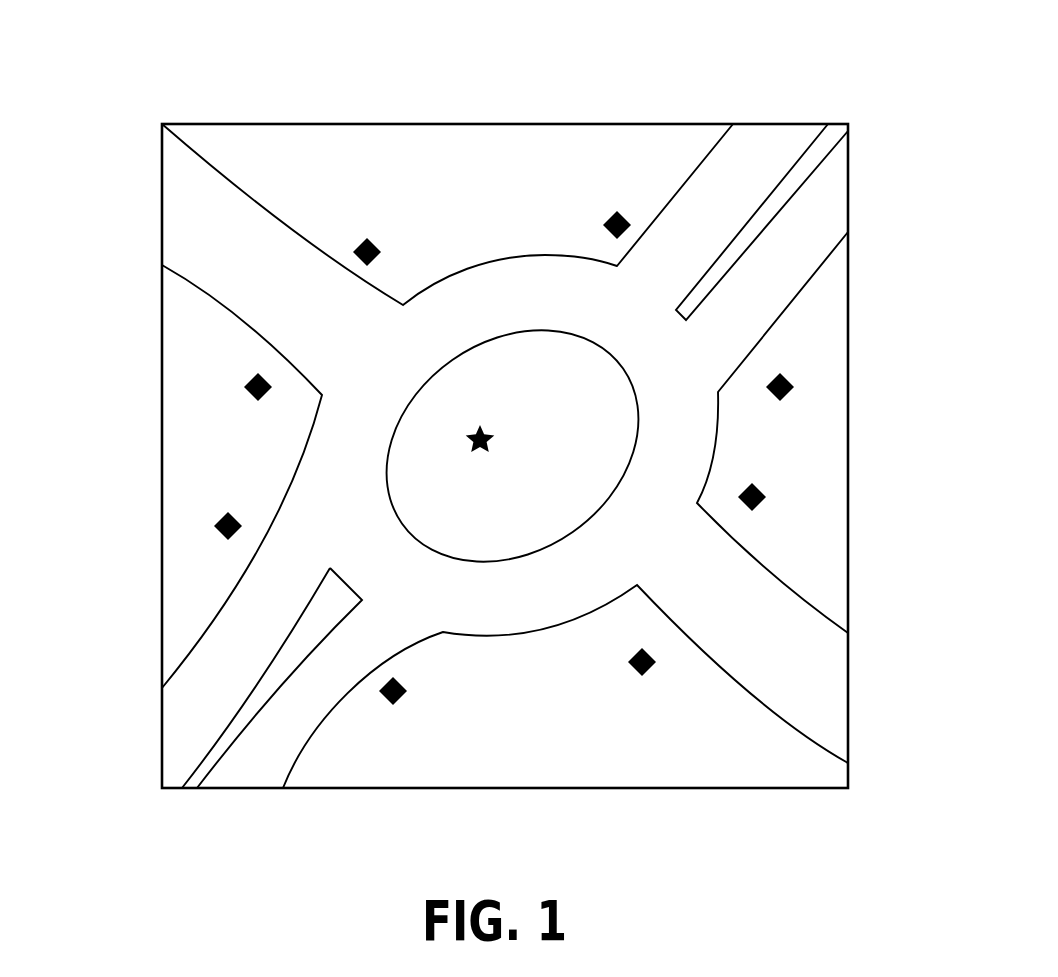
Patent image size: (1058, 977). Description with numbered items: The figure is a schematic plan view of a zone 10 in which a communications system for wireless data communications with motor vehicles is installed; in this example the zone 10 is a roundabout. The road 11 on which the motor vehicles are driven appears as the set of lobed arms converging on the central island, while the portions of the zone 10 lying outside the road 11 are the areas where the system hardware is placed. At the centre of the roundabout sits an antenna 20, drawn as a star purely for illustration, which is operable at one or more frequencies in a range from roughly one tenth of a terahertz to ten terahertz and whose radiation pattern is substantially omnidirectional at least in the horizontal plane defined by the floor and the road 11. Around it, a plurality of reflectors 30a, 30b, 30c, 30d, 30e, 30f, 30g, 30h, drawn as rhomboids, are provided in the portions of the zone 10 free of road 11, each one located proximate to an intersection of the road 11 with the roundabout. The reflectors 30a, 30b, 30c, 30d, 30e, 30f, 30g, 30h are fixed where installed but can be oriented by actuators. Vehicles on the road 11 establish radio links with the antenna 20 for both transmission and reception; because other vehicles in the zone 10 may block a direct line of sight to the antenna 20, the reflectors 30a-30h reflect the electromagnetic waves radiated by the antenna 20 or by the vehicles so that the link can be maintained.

The zone 10 is at (205, 113).
The road 11 is at (225, 238).
The antenna 20 is at (468, 441).
The reflector 30a is at (244, 387).
The reflector 30b is at (367, 238).
The reflector 30c is at (617, 211).
The reflector 30d is at (788, 380).
The reflector 30e is at (766, 492).
The reflector 30f is at (656, 661).
The reflector 30g is at (379, 691).
The reflector 30h is at (214, 528).